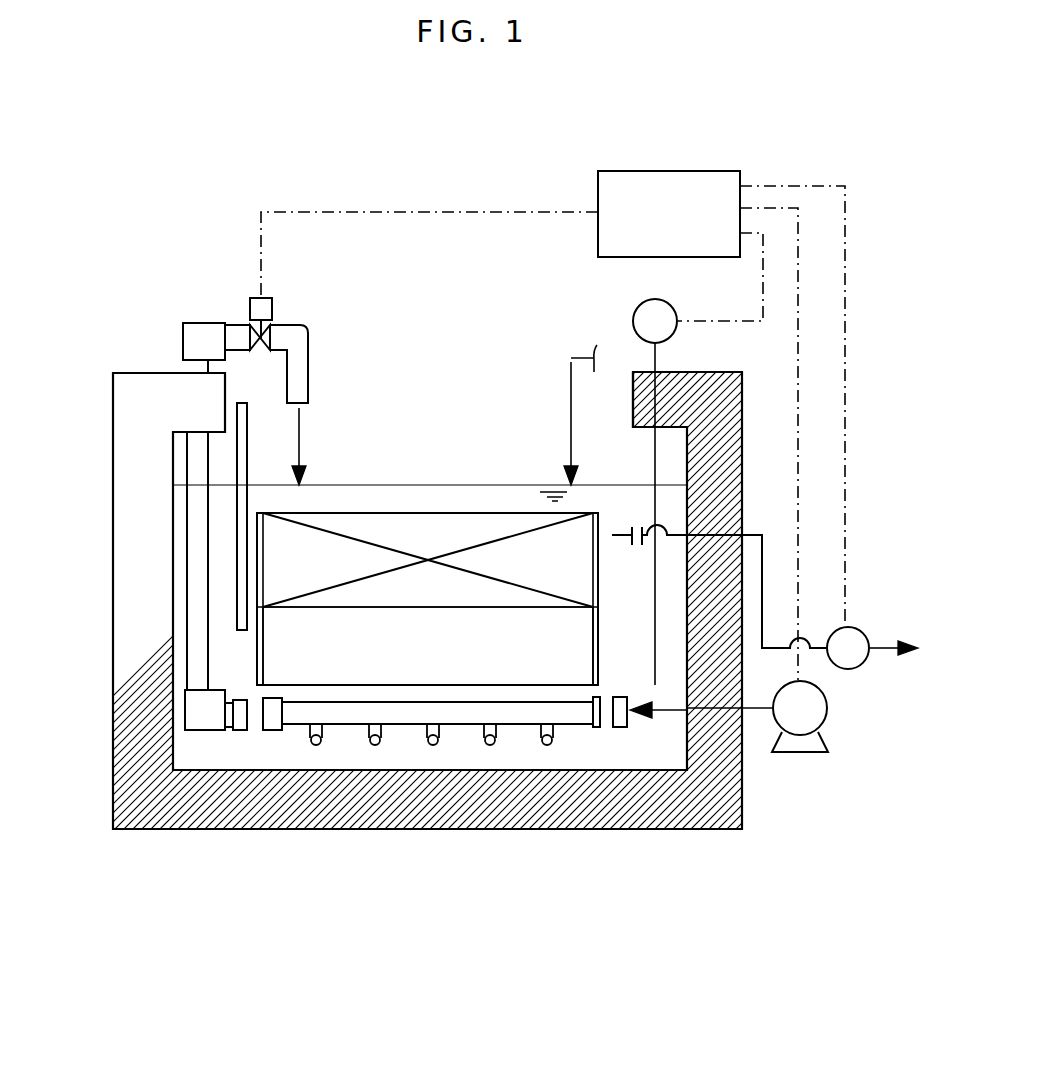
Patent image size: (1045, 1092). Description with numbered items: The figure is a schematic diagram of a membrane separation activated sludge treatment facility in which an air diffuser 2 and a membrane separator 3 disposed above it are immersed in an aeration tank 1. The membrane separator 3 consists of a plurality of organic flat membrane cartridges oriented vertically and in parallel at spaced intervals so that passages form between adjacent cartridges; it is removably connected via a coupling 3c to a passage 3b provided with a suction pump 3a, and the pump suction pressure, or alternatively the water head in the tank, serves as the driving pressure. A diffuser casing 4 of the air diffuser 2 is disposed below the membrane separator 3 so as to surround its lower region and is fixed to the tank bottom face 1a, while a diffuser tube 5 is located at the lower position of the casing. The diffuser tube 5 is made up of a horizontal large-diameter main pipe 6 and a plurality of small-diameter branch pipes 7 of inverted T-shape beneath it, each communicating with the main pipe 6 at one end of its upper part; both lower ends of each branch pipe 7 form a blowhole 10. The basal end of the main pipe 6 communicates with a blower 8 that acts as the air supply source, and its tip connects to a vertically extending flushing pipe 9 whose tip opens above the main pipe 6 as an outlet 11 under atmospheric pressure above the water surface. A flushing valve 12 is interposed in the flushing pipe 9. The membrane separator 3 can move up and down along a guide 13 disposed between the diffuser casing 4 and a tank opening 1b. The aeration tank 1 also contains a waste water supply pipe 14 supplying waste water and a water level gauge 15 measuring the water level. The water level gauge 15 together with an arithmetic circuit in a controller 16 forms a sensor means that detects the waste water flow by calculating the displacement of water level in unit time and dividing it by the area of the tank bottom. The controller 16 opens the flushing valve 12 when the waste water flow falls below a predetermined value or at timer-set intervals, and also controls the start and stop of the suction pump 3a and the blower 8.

The aeration tank 1 is at (657, 745).
The tank bottom face 1a is at (306, 770).
The tank opening 1b is at (631, 382).
The air diffuser 2 is at (466, 733).
The membrane separator 3 is at (408, 513).
The suction pump 3a is at (850, 669).
The passage 3b is at (758, 535).
The coupling 3c is at (637, 548).
The diffuser casing 4 is at (352, 660).
The diffuser tube 5 is at (570, 903).
The main pipe 6 is at (567, 730).
The branch pipes 7 is at (534, 745).
The blower 8 is at (801, 755).
The flushing pipe 9 is at (195, 622).
The blowhole 10 is at (430, 745).
The outlet 11 is at (303, 422).
The flushing valve 12 is at (250, 310).
The guide 13 is at (236, 452).
The waste water supply pipe 14 is at (568, 395).
The water level gauge 15 is at (633, 308).
The controller 16 is at (665, 170).